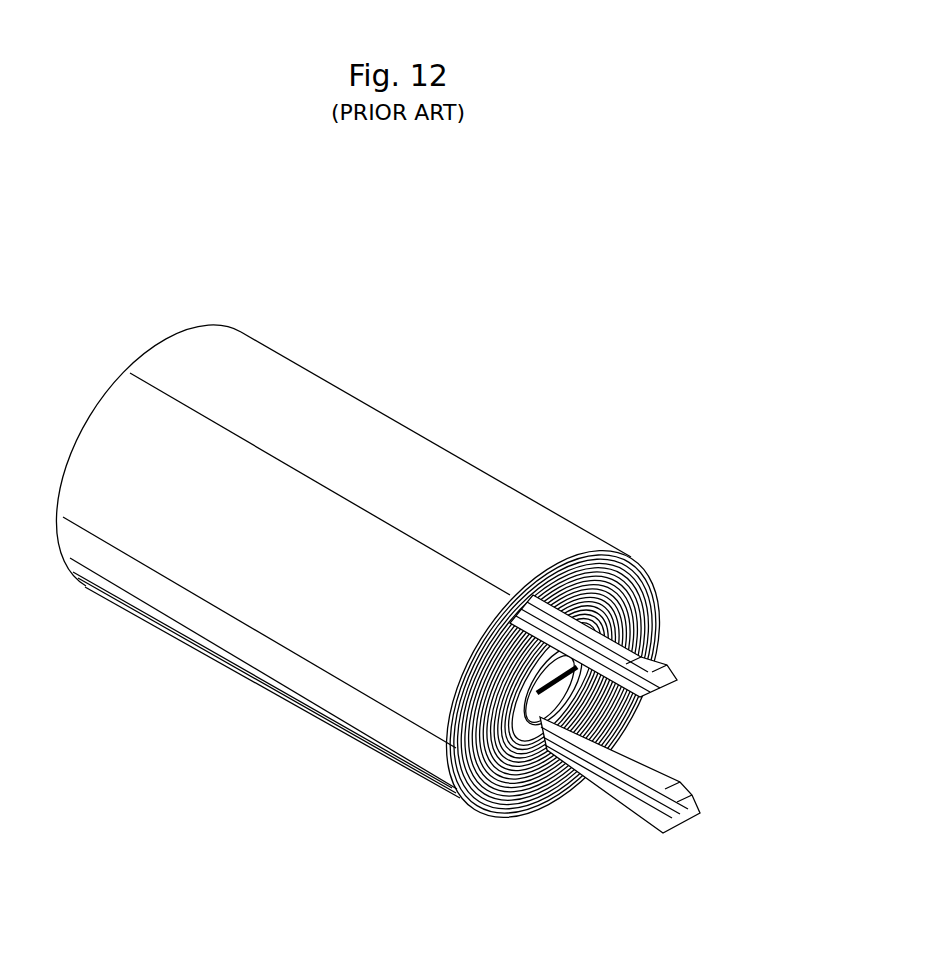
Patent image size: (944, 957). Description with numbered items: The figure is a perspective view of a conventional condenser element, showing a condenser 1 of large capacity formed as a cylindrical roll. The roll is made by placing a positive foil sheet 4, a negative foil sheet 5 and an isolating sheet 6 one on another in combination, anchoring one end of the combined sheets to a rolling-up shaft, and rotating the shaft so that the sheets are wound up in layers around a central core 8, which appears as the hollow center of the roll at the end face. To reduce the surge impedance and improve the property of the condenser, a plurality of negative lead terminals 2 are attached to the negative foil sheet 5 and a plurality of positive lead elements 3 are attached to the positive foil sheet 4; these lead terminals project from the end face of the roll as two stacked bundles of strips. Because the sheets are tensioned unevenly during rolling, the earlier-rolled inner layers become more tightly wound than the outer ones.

The condenser 1 is at (416, 607).
The negative lead terminals 2 is at (672, 680).
The positive lead elements 3 is at (700, 814).
The positive foil sheet 4 is at (462, 797).
The negative foil sheet 5 is at (480, 802).
The isolating sheet 6 is at (503, 810).
The winding core 8 is at (537, 663).